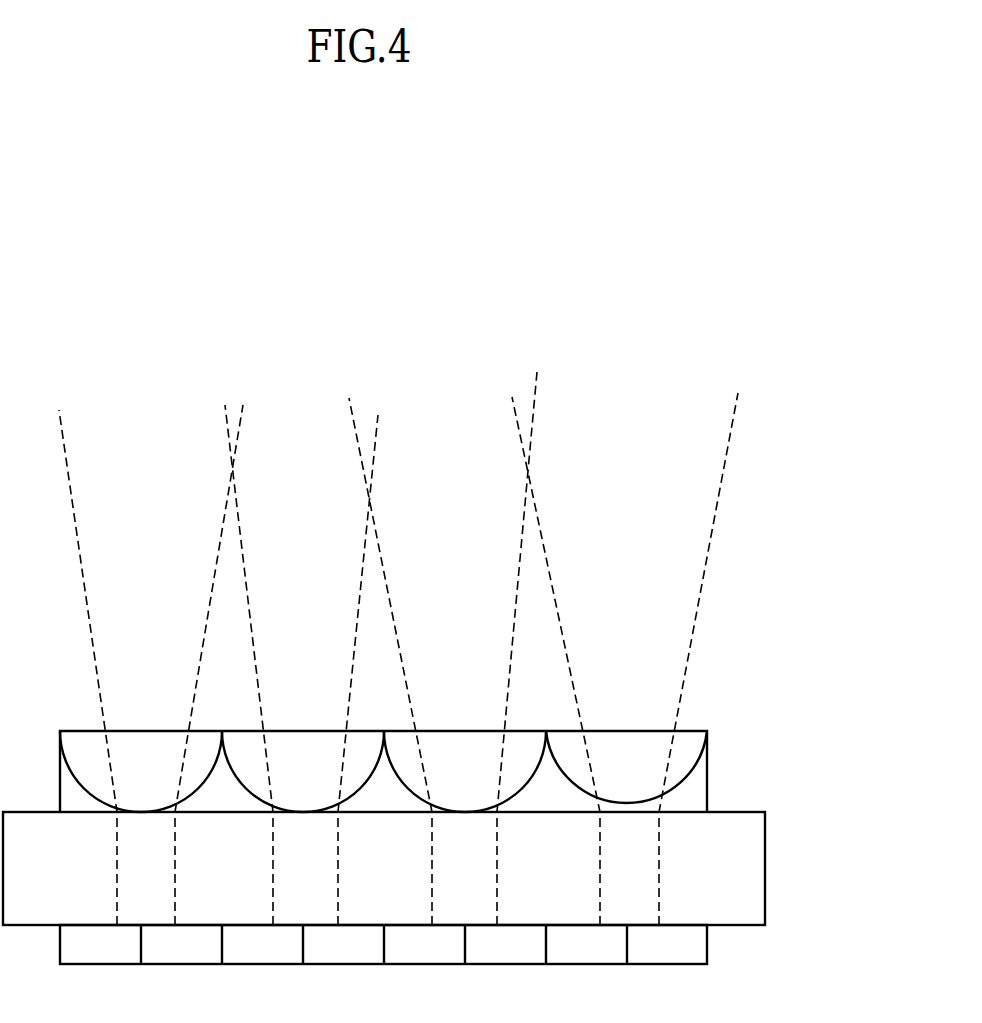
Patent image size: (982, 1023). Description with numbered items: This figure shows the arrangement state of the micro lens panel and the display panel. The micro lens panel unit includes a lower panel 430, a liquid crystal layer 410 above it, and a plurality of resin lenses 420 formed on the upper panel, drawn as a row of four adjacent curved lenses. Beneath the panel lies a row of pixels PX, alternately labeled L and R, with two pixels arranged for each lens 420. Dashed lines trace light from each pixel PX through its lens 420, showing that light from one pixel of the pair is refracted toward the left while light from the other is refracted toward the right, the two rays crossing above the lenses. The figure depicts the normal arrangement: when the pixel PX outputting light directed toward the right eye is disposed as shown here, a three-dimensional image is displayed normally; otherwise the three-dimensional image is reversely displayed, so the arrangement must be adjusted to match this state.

The liquid crystal layer 410 is at (690, 797).
The resin lens 420 is at (670, 753).
The lower panel 430 is at (755, 889).
The pixel PX is at (735, 952).